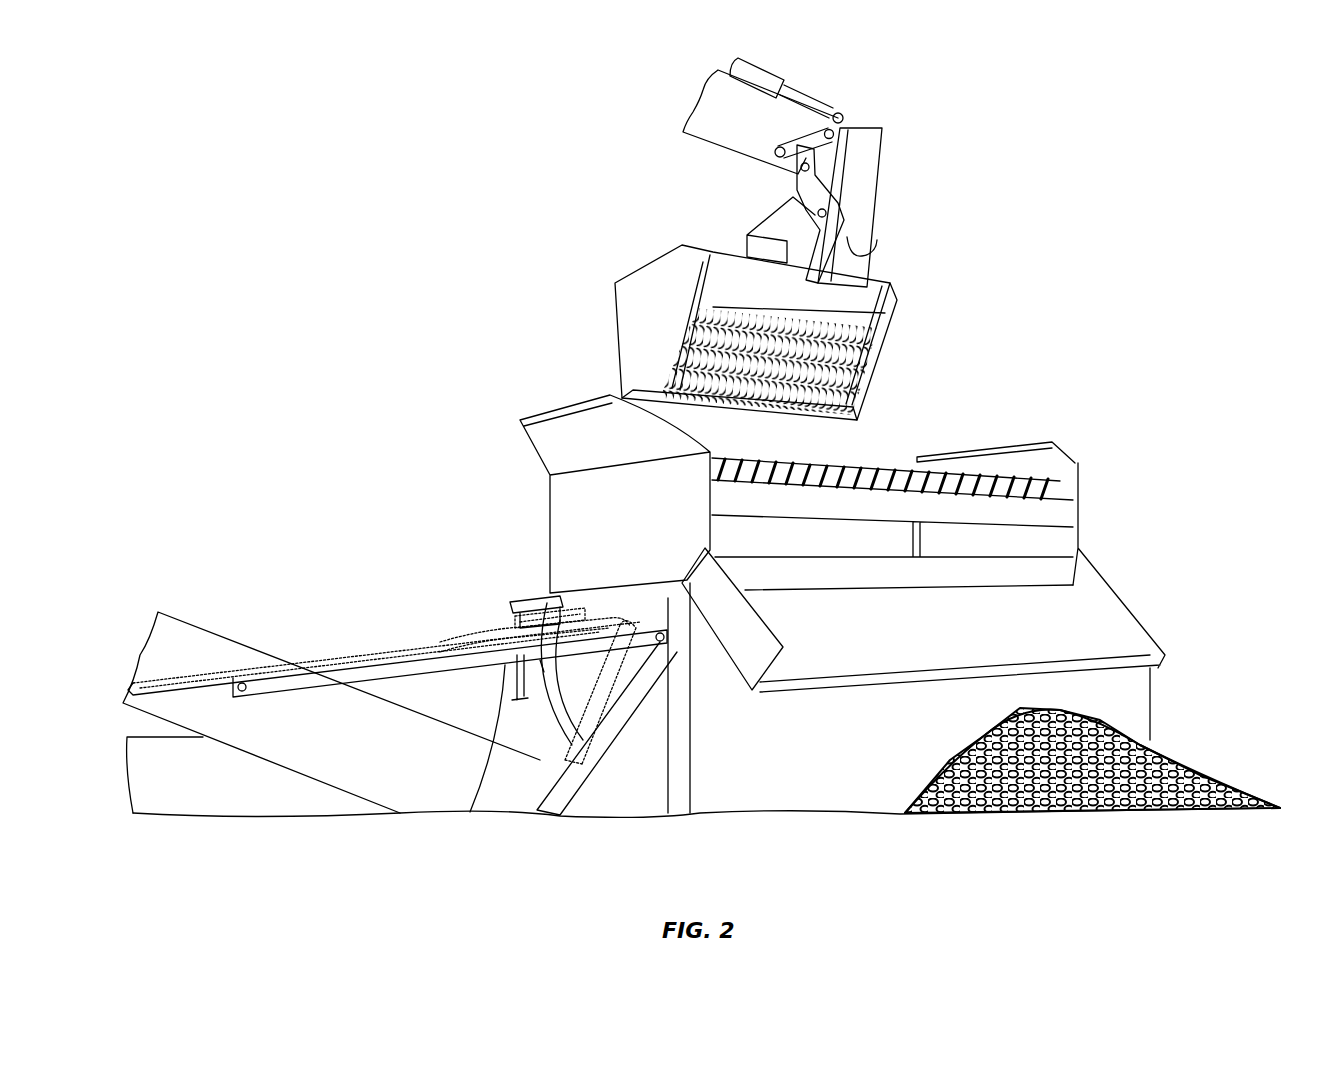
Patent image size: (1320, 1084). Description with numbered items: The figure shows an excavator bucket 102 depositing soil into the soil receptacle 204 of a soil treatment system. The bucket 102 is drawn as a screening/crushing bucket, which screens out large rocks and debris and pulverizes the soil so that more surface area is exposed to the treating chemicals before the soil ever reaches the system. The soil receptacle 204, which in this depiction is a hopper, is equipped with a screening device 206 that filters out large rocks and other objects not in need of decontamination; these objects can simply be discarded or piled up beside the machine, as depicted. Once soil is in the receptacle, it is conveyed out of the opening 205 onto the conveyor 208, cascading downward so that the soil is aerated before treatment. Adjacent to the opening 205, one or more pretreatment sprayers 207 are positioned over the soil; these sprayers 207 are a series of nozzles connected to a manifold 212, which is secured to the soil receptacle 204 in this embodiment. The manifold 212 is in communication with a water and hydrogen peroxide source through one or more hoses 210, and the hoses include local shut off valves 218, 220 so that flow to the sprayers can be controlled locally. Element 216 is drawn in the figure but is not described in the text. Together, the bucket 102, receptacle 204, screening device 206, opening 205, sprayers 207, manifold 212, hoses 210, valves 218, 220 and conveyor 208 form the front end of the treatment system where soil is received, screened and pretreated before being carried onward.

The bucket 102 is at (910, 302).
The soil receptacle 204 is at (767, 750).
The opening 205 is at (545, 745).
The screening device 206 is at (965, 470).
The pretreatment sprayers 207 is at (543, 677).
The conveyor 208 is at (352, 744).
The hoses 210 is at (545, 605).
The manifold 212 is at (506, 592).
The conveyor 216 is at (305, 658).
The local shut off valve 218 is at (598, 634).
The local shut off valve 220 is at (488, 626).